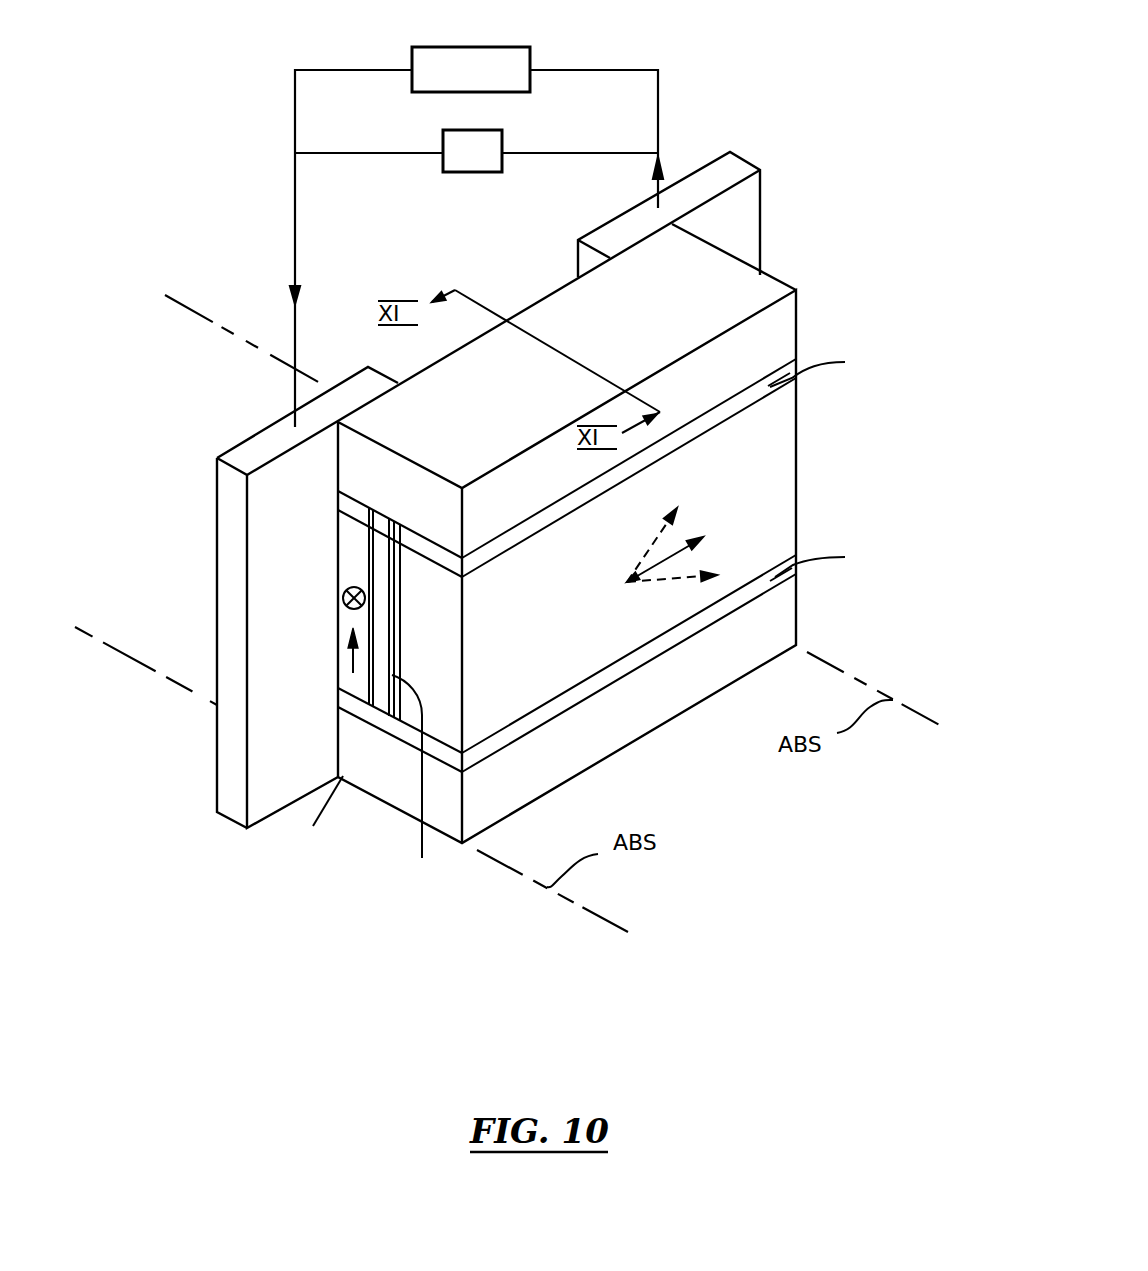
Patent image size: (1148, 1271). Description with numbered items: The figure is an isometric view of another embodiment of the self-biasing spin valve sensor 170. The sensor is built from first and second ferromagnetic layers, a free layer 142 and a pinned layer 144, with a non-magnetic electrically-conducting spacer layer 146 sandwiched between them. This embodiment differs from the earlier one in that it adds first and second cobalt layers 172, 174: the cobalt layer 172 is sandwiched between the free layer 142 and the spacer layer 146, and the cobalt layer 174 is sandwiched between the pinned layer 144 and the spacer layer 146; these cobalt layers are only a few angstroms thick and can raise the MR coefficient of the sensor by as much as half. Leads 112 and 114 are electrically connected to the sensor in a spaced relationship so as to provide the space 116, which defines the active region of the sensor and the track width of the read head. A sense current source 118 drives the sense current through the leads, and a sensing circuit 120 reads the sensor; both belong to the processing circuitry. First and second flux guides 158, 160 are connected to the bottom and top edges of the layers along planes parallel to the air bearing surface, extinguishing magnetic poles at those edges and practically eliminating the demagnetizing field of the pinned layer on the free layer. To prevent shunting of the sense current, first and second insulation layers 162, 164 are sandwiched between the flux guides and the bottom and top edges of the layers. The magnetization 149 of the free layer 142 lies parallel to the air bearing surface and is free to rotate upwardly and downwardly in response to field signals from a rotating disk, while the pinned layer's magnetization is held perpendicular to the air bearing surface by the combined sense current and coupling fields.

The lead 112 is at (273, 530).
The lead 114 is at (752, 227).
The space 116 is at (523, 277).
The sense current source 118 is at (473, 175).
The sensing circuit 120 is at (482, 47).
The free layer 142 is at (440, 659).
The pinned layer 144 is at (343, 640).
The spacer layer 146 is at (380, 704).
The magnetization 149 is at (667, 555).
The first flux guide 158 is at (363, 766).
The second flux guide 160 is at (417, 490).
The first insulation layer 162 is at (657, 648).
The second insulation layer 164 is at (563, 507).
The spin valve sensor 170 is at (832, 132).
The first cobalt layer 172 is at (402, 690).
The second cobalt layer 174 is at (347, 692).